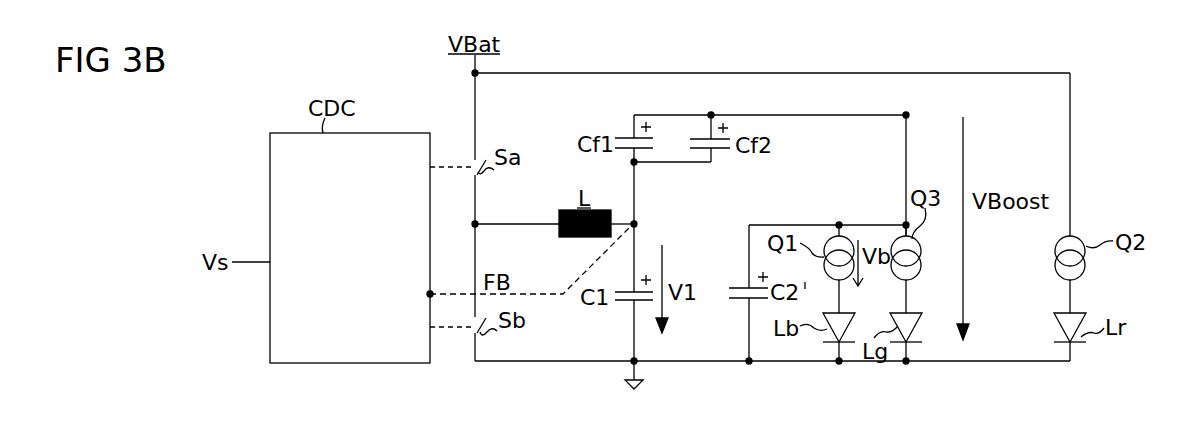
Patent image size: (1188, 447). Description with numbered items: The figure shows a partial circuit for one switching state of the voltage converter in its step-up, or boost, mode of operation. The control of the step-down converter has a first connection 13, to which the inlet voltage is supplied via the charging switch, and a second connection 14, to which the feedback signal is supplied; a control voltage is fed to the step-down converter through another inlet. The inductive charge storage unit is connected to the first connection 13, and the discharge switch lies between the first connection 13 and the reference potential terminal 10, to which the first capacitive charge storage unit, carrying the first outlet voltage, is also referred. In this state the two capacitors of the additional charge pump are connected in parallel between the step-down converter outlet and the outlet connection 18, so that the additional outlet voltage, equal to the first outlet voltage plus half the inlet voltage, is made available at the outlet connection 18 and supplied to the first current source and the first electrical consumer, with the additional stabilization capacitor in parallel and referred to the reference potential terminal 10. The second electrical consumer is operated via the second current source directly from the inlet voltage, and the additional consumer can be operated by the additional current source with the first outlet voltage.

The reference potential terminal 10 is at (633, 383).
The first connection 13 is at (478, 222).
The second connection 14 is at (431, 293).
The outlet connection 18 is at (908, 114).